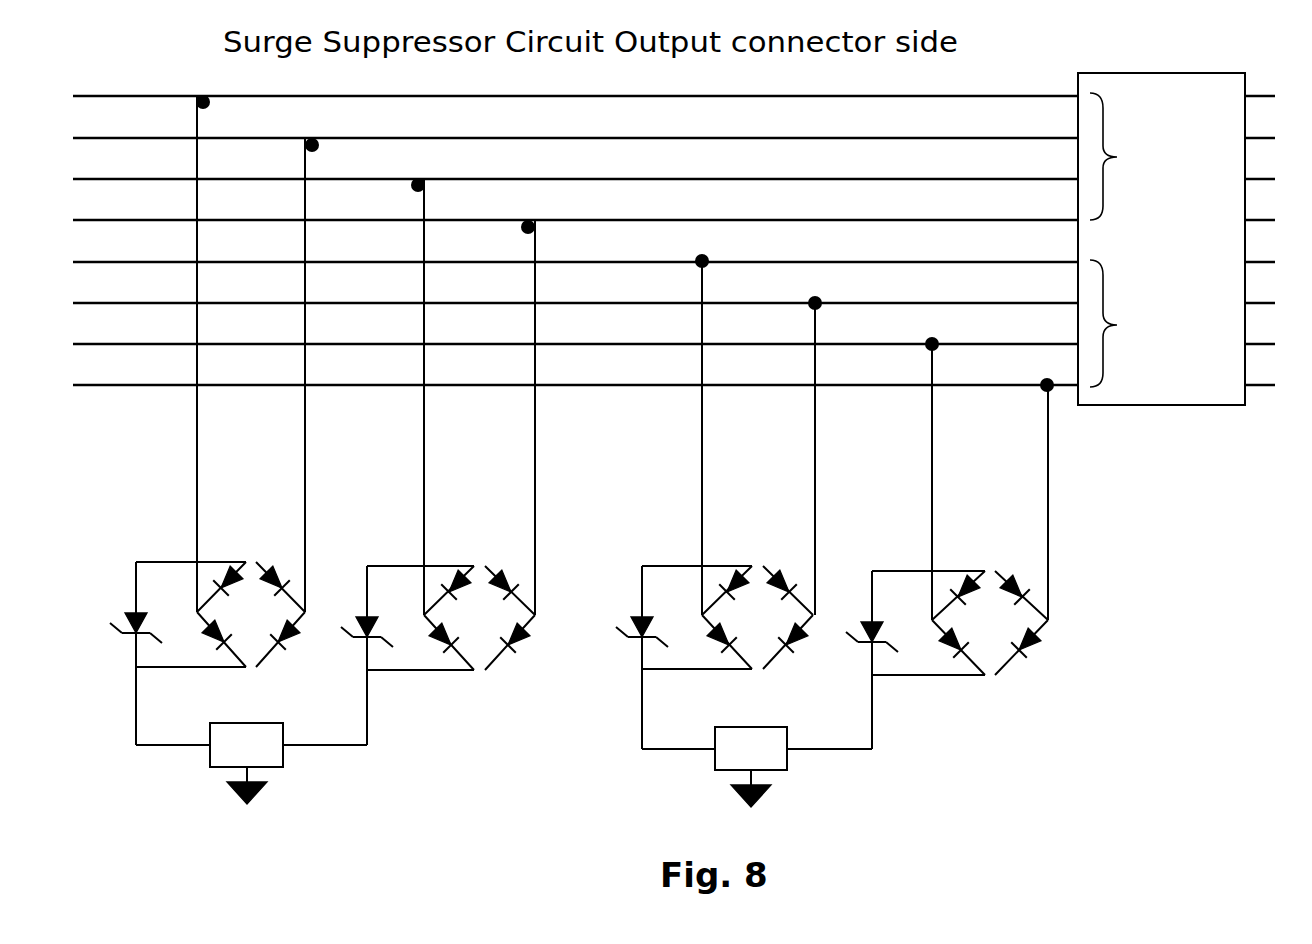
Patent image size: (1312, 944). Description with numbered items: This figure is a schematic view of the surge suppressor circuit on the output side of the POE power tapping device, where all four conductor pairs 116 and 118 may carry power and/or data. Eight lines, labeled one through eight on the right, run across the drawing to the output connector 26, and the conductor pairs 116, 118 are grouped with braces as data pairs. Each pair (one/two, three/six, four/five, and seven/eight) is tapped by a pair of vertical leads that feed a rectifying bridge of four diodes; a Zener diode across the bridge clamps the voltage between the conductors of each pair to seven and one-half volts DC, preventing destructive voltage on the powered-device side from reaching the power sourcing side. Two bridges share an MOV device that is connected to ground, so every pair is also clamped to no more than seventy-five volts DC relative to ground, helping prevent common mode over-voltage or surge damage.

The output connector 26 is at (1185, 250).
The conductor pairs 116 is at (1173, 61).
The conductor pairs 118 is at (1166, 337).